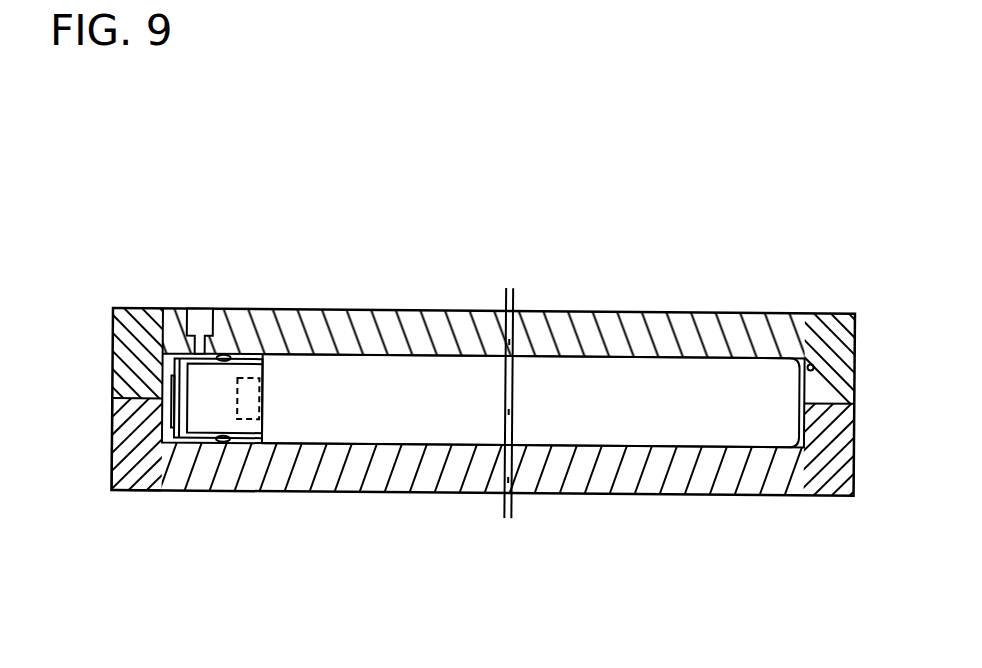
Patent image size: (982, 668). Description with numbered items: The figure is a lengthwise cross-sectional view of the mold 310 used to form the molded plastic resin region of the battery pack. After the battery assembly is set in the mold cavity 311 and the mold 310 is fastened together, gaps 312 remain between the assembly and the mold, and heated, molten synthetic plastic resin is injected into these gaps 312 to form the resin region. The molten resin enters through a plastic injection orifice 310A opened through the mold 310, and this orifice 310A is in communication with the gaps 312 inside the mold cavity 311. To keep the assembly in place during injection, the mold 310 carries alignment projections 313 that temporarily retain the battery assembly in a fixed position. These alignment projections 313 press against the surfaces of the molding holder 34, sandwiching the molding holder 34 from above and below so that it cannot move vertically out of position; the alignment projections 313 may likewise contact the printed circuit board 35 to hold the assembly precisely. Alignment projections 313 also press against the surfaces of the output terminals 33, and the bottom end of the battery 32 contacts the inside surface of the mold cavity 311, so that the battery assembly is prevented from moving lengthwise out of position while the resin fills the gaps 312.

The mold 310 is at (625, 334).
The plastic injection orifice 310A is at (222, 293).
The mold cavity 311 is at (812, 357).
The gaps 312 is at (157, 435).
The alignment projections 313 is at (173, 352).
The battery 32 is at (412, 370).
The output terminals 33 is at (160, 405).
The molding holder 34 is at (208, 438).
The printed circuit board 35 is at (205, 422).